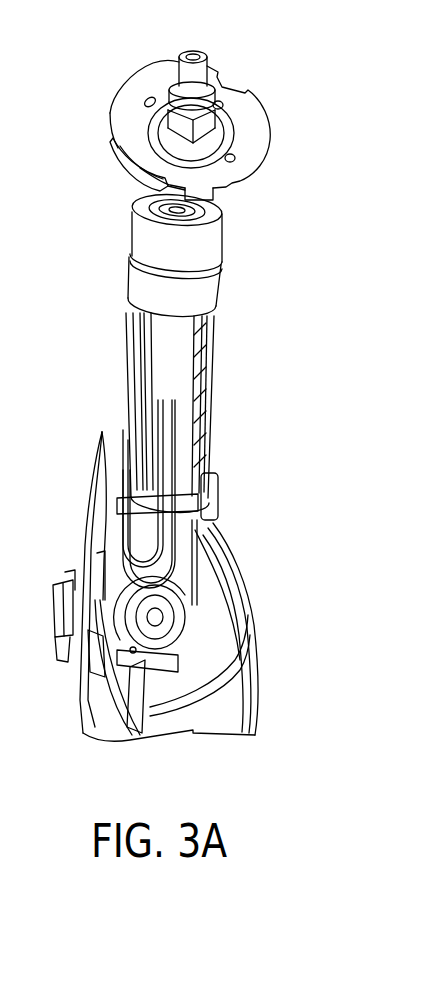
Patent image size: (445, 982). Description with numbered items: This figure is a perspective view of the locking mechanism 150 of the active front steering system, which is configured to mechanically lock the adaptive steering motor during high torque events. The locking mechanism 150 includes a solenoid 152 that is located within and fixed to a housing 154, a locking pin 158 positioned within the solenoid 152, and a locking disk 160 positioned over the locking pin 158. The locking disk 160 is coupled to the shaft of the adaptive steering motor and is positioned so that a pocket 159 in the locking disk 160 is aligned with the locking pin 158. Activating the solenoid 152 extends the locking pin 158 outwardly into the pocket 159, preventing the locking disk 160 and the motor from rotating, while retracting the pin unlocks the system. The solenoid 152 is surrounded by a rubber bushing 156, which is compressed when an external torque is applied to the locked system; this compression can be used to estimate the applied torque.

The locking mechanism 150 is at (352, 400).
The solenoid 152 is at (158, 362).
The housing 154 is at (135, 279).
The rubber bushing 156 is at (225, 238).
The locking pin 158 is at (177, 213).
The pocket 159 is at (137, 195).
The locking disk 160 is at (248, 119).